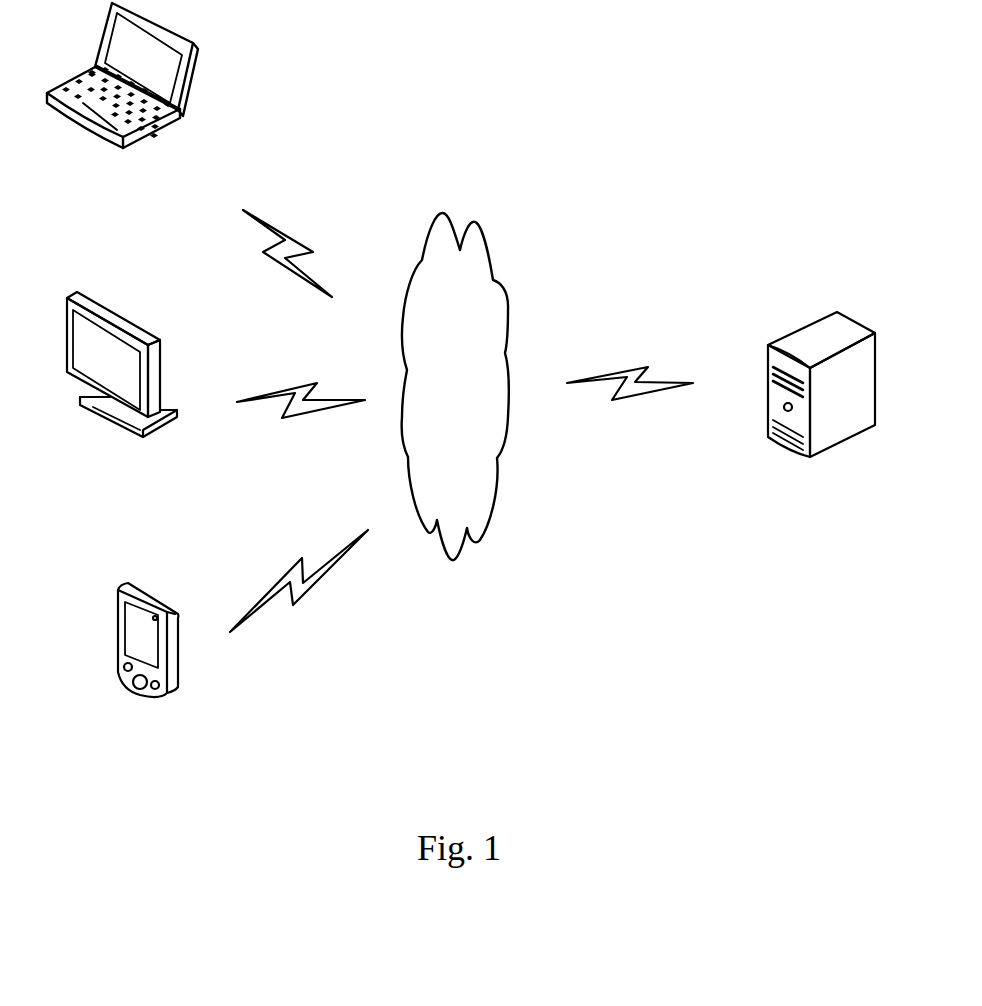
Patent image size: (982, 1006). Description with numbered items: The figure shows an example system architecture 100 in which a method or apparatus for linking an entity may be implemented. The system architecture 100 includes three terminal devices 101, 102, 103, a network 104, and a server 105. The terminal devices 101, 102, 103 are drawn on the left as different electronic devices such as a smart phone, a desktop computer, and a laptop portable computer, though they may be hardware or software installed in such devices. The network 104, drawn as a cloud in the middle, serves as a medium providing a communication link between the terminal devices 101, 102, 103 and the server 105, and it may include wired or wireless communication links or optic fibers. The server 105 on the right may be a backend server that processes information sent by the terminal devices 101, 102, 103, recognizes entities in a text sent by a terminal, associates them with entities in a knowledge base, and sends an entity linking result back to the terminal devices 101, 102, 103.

The system architecture 100 is at (565, 113).
The terminal device 101 is at (148, 663).
The terminal device 102 is at (122, 385).
The terminal device 103 is at (122, 97).
The network 104 is at (455, 386).
The server 105 is at (821, 410).